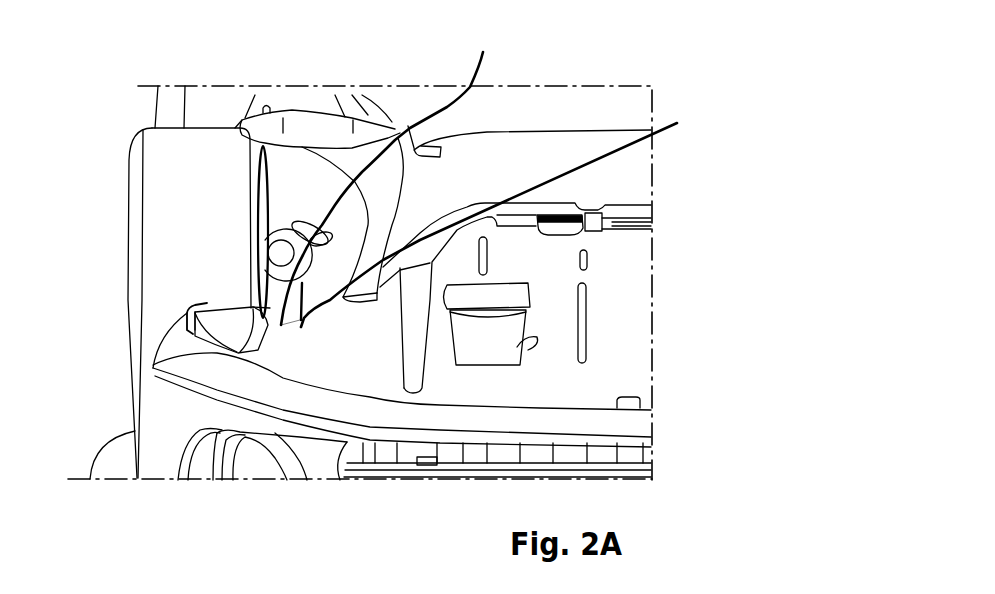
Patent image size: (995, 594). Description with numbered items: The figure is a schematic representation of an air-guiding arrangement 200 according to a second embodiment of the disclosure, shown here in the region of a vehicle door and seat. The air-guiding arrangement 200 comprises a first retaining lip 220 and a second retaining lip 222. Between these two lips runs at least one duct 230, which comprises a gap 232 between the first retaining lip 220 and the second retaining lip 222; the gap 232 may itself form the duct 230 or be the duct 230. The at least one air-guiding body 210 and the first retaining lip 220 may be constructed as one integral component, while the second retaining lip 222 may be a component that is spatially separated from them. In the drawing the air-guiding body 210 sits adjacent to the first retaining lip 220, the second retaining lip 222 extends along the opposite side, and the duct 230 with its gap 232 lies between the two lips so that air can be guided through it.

The air-guiding arrangement 200 is at (179, 317).
The air-guiding body 210 is at (210, 337).
The first retaining lip 220 is at (207, 303).
The second retaining lip 222 is at (510, 217).
The duct 230 is at (286, 316).
The gap 232 is at (391, 170).